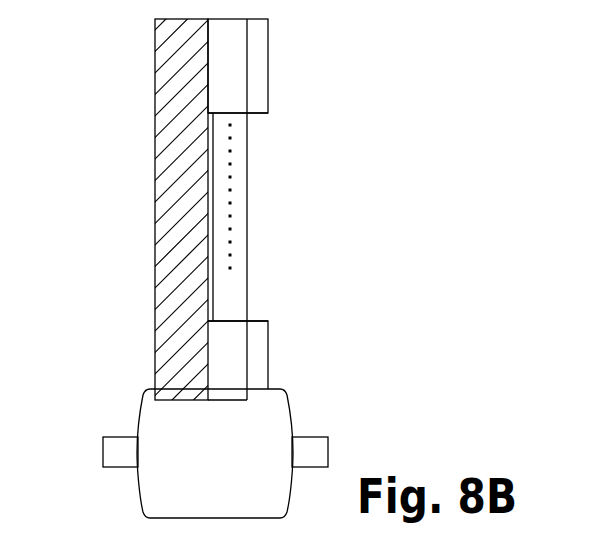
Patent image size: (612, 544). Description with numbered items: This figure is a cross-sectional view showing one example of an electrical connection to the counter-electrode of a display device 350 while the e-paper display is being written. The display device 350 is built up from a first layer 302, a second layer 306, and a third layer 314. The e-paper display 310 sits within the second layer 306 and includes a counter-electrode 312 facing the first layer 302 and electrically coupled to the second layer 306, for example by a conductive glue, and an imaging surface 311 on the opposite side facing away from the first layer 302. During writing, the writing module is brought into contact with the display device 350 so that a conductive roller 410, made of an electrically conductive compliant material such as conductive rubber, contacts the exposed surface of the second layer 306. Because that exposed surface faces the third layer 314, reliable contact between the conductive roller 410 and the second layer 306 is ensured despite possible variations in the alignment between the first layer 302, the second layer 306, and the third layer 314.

The first layer 302 is at (167, 158).
The second layer 306 is at (222, 358).
The e-paper display 310 is at (232, 203).
The imaging surface 311 is at (247, 157).
The counter-electrode 312 is at (208, 268).
The third layer 314 is at (258, 49).
The display device 350 is at (155, 67).
The conductive roller 410 is at (258, 425).